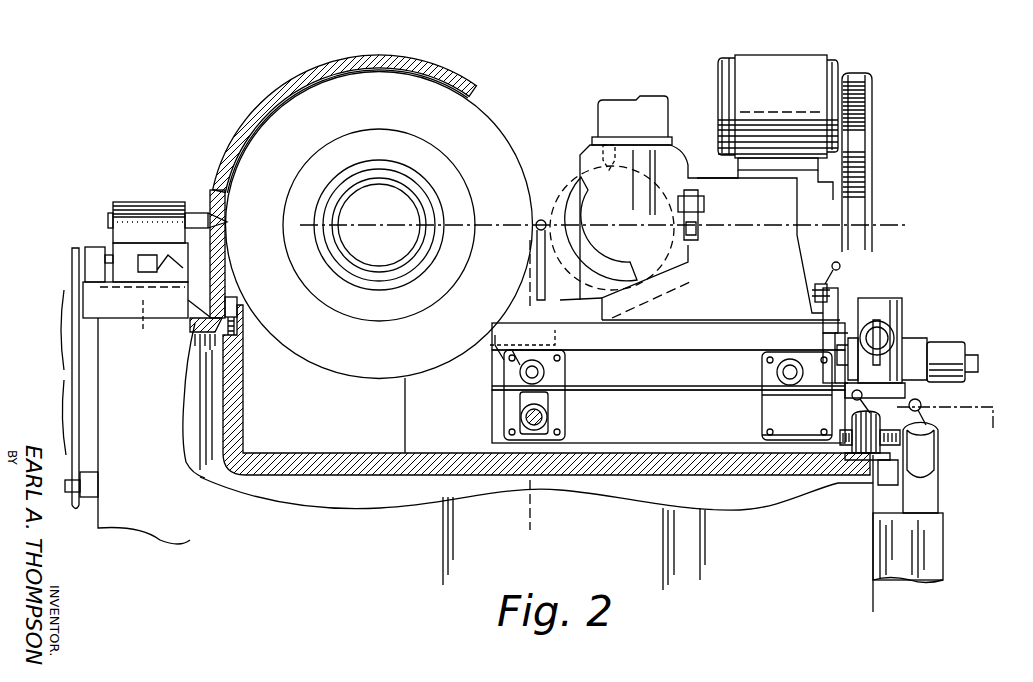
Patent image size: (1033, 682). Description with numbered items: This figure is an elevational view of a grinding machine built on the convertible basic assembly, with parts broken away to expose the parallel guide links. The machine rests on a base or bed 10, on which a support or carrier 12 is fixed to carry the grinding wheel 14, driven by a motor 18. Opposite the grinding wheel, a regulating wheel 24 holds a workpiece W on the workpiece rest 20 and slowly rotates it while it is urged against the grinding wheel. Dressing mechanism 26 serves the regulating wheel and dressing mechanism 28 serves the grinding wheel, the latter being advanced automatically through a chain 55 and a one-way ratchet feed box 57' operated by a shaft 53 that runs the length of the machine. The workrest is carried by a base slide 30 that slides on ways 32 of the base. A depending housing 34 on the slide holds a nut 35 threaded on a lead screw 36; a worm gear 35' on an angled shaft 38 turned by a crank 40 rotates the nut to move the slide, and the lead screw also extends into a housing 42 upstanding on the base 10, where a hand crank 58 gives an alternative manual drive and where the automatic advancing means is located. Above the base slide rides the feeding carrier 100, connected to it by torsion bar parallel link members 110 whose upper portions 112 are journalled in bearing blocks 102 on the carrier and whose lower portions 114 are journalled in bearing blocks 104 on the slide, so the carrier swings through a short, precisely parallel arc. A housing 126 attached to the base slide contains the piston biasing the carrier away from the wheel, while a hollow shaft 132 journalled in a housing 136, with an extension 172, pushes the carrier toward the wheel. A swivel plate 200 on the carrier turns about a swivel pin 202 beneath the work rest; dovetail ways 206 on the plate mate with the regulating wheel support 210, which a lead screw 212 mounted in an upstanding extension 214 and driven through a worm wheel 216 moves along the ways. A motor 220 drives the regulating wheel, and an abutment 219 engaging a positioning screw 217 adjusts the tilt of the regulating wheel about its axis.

The grinding wheel 14 is at (487, 138).
The workpiece holder or rest 20 is at (515, 256).
The support or carrier 12 is at (284, 376).
The dressing mechanism for the grinding wheel 28 is at (150, 208).
The one-way ratchet feed box 57' is at (118, 242).
The chain 55 is at (100, 330).
The motor 18 is at (85, 402).
The shaft 53 is at (92, 484).
The workpiece W is at (541, 218).
The regulating wheel 24 is at (568, 192).
The dressing mechanism for the regulating wheel 26 is at (624, 118).
The regulating wheel support 210 is at (756, 289).
The dovetail ways 206 is at (612, 305).
The positioning screw 217 is at (705, 202).
The abutment 219 is at (700, 240).
The worm wheel 216 is at (812, 313).
The upstanding extension 214 is at (832, 310).
The lead screw 212 is at (845, 270).
The motor 220 is at (800, 62).
The swivel plate 200 is at (682, 346).
The carrier 100 is at (688, 383).
The base slide 30 is at (680, 423).
The bearing blocks 102 is at (555, 366).
The torsion bar parallel link members 110 is at (540, 393).
The lower portions 114 is at (556, 428).
The bearing blocks 104 is at (776, 423).
The upper portions 112 is at (502, 373).
The swivel pin 202 is at (505, 336).
The hollow shaft 132 is at (840, 336).
The extension of the housing 172 is at (902, 324).
The housing 136 is at (912, 350).
The housing 126 is at (950, 360).
The crank 40 is at (968, 372).
The nut 35 is at (848, 447).
The lead screw 36 is at (866, 454).
The shaft 38 is at (860, 454).
The depending housing 34 is at (856, 462).
The worm gear 35' is at (864, 506).
The ways 32 is at (750, 460).
The hand crank 58 is at (922, 414).
The housing 42 is at (925, 454).
The base or bed 10 is at (980, 590).